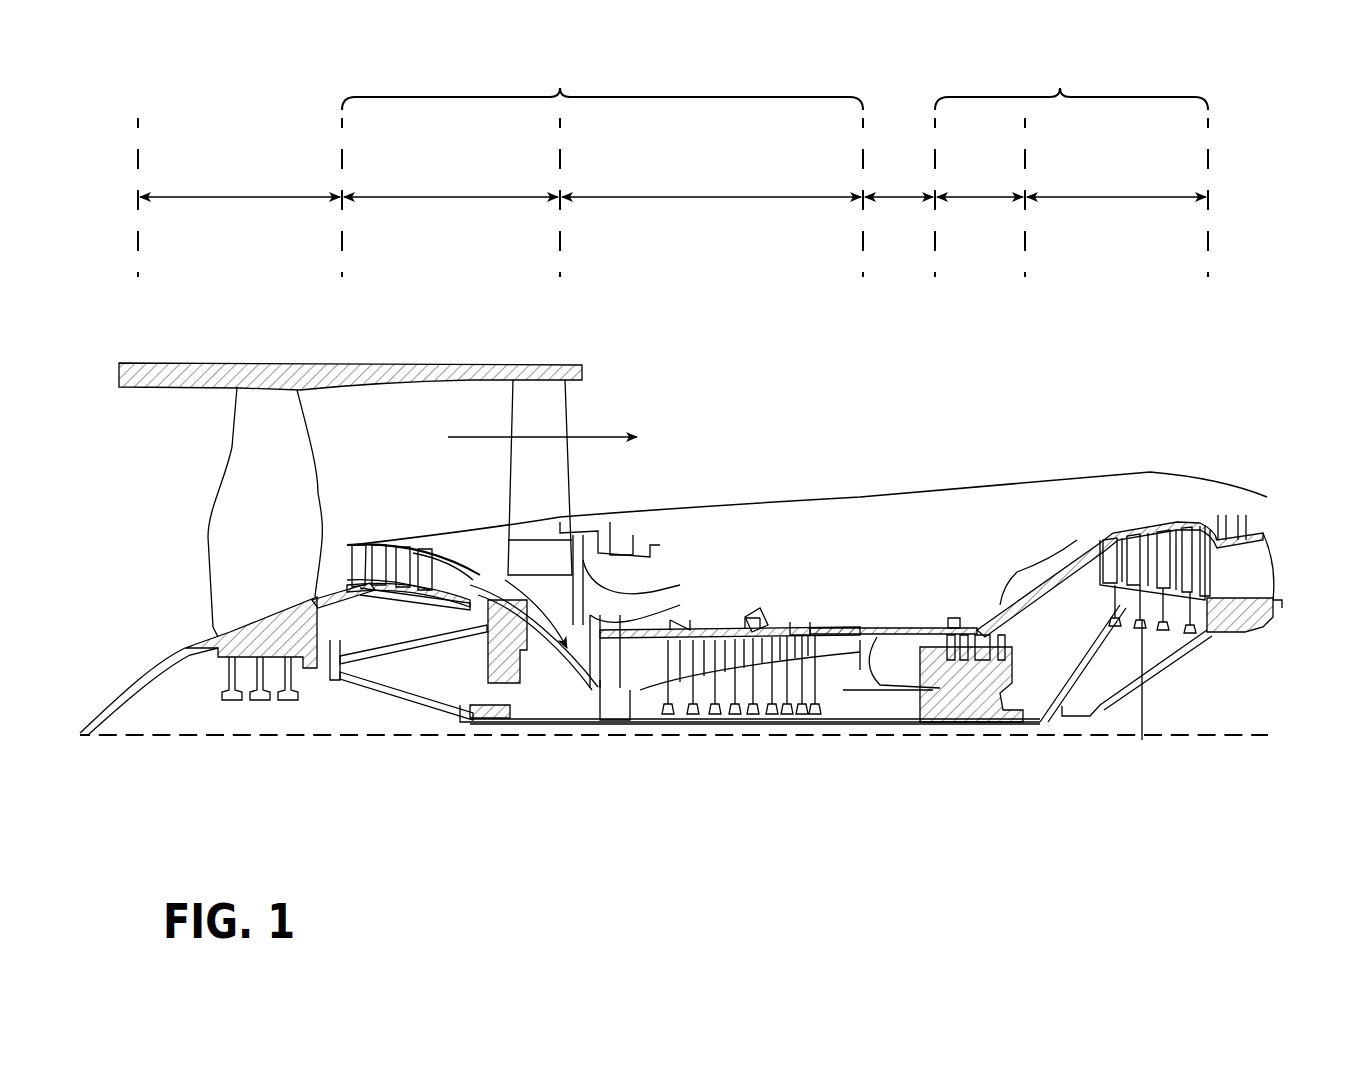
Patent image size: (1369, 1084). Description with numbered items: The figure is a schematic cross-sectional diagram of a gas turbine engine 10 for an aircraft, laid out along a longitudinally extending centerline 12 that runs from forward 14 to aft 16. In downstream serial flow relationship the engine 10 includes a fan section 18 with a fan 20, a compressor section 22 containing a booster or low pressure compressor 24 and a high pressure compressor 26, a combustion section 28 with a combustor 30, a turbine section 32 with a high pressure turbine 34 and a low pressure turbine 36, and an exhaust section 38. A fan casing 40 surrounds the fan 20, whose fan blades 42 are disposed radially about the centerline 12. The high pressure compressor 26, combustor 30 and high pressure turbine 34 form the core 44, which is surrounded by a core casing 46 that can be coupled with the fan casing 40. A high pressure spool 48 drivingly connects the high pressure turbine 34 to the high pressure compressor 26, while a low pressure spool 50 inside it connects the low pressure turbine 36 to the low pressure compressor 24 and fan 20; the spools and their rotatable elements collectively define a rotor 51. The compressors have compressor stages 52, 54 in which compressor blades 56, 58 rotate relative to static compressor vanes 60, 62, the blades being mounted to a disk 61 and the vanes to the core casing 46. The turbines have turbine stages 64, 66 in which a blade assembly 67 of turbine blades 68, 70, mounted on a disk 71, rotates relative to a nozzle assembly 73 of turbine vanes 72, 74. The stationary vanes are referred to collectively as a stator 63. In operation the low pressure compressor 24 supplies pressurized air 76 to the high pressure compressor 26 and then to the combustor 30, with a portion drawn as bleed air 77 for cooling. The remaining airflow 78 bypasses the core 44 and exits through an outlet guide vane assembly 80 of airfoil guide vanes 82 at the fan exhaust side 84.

The gas turbine engine 10 is at (890, 355).
The centerline 12 is at (238, 737).
The forward 14 is at (110, 499).
The aft 16 is at (1322, 587).
The fan section 18 is at (240, 184).
The fan 20 is at (178, 577).
The compressor section 22 is at (602, 83).
The low pressure compressor 24 is at (451, 184).
The high pressure compressor 26 is at (711, 184).
The combustion section 28 is at (899, 178).
The combustor 30 is at (900, 645).
The turbine section 32 is at (1071, 83).
The high pressure turbine 34 is at (980, 184).
The low pressure turbine 36 is at (1116, 184).
The exhaust section 38 is at (1273, 538).
The fan casing 40 is at (380, 366).
The fan blades 42 is at (293, 443).
The core 44 is at (840, 535).
The core casing 46 is at (1077, 540).
The HP spool 48 is at (877, 707).
The LP spool 50 is at (493, 725).
The rotor 51 is at (745, 737).
The compressor stages 52 is at (400, 486).
The compressor stages 54 is at (693, 533).
The compressor blades 56 is at (378, 547).
The compressor blades 58 is at (640, 640).
The static compressor vanes 60 is at (357, 547).
The disk 61 is at (375, 592).
The static compressor vanes 62 is at (655, 630).
The stator 63 is at (1138, 520).
The turbine stages 64 is at (1000, 558).
The turbine stages 66 is at (1190, 417).
The blade assembly 67 is at (1000, 600).
The turbine blades 68 is at (958, 608).
The turbine blades 70 is at (1190, 535).
The disk 71 is at (957, 707).
The turbine vanes 72 is at (935, 635).
The nozzle assembly 73 is at (918, 600).
The turbine vanes 74 is at (1178, 533).
The pressurized air 76 is at (575, 595).
The bleed air 77 is at (745, 622).
The airflow 78 is at (448, 437).
The outlet guide vane assembly 80 is at (587, 488).
The airfoil guide vanes 82 is at (517, 475).
The fan exhaust side 84 is at (607, 393).